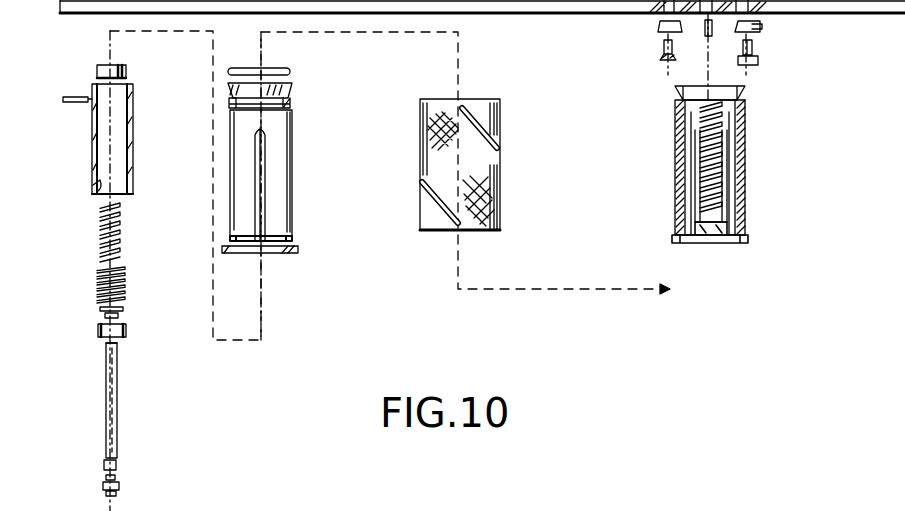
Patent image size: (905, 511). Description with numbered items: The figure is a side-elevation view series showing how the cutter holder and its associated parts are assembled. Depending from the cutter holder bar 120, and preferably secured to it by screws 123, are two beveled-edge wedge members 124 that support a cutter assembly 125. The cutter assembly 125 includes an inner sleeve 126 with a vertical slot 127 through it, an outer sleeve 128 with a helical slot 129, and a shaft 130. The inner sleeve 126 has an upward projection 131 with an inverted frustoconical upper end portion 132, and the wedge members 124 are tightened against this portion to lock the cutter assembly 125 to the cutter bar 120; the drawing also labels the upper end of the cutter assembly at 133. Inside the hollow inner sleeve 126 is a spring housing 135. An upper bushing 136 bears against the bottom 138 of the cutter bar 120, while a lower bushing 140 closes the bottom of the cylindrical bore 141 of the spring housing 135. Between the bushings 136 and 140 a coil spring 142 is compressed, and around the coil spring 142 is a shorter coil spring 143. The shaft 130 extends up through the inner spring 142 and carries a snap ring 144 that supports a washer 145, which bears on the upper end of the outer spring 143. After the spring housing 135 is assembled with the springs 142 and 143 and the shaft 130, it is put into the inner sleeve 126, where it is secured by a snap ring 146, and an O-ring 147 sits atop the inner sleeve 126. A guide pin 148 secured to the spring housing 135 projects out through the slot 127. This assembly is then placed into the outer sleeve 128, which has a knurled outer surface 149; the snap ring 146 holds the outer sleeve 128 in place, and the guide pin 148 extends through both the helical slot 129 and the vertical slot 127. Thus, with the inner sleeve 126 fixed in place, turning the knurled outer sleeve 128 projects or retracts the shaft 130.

The cutter holder bar 120 is at (603, 14).
The screws 123 is at (663, 57).
The beveled-edge wedge members 124 is at (658, 27).
The cutter assembly 125 is at (750, 134).
The inner sleeve 126 is at (293, 139).
The vertical slot 127 is at (265, 215).
The outer sleeve 128 is at (500, 196).
The helical slot 129 is at (498, 140).
The shaft 130 is at (118, 408).
The upward projection 131 is at (285, 88).
The inverted frustoconical upper end portion 132 is at (290, 100).
The upper flange 133 is at (737, 84).
The spring housing 135 is at (133, 119).
The upper bushing 136 is at (126, 68).
The bottom of the cutter bar 138 is at (521, 14).
The lower bushing 140 is at (120, 338).
The cylindrical bore 141 is at (95, 185).
The coil spring 142 is at (120, 224).
The shorter coil spring 143 is at (122, 275).
The snap ring 144 is at (125, 316).
The washer 145 is at (125, 307).
The snap ring 146 is at (291, 253).
The O-ring 147 is at (290, 70).
The guide pin 148 is at (63, 99).
The knurled outer surface 149 is at (498, 220).